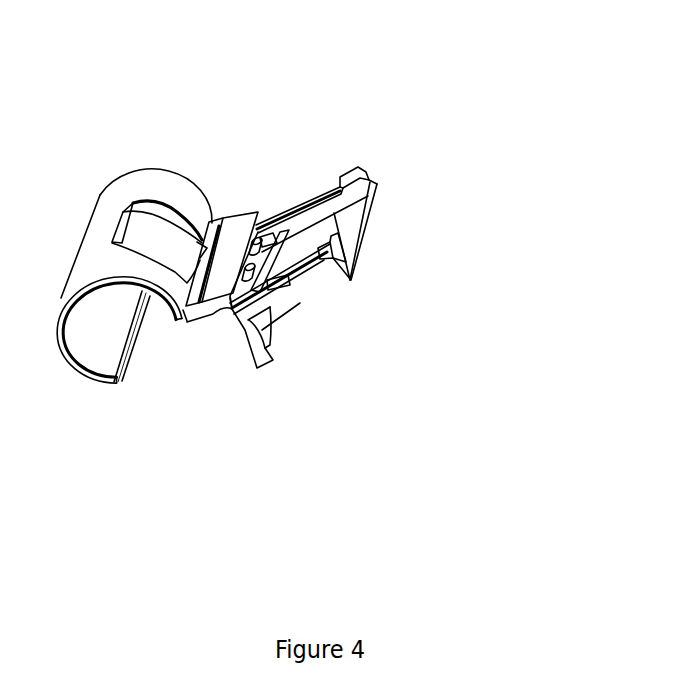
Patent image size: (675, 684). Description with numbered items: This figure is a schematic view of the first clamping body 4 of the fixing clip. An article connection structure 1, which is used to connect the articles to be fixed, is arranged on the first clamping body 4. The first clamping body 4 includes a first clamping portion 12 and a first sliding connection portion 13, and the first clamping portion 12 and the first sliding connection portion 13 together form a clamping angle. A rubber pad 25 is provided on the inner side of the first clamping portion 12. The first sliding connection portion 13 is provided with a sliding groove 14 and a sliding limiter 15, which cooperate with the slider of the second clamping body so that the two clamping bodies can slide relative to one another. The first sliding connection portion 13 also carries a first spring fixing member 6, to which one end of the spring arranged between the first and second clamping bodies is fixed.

The article connection structure 1 is at (99, 238).
The first clamping body 4 is at (238, 220).
The first spring fixing member 6 is at (272, 220).
The first clamping portion 12 is at (247, 342).
The first sliding connection portion 13 is at (349, 217).
The sliding groove 14 is at (319, 256).
The sliding limiter 15 is at (348, 175).
The rubber pad 25 is at (275, 330).